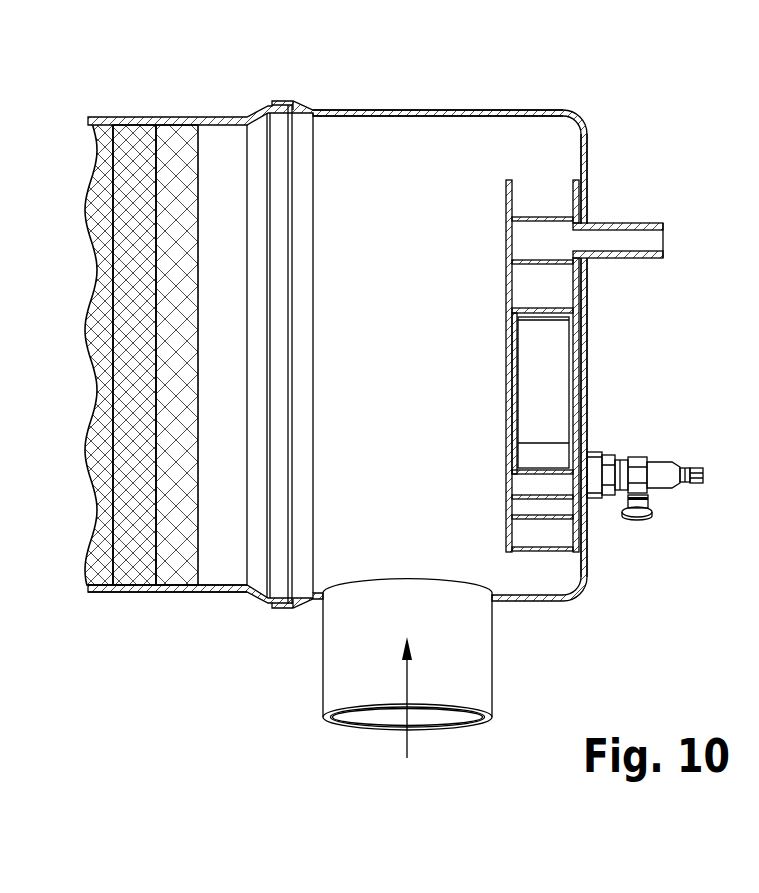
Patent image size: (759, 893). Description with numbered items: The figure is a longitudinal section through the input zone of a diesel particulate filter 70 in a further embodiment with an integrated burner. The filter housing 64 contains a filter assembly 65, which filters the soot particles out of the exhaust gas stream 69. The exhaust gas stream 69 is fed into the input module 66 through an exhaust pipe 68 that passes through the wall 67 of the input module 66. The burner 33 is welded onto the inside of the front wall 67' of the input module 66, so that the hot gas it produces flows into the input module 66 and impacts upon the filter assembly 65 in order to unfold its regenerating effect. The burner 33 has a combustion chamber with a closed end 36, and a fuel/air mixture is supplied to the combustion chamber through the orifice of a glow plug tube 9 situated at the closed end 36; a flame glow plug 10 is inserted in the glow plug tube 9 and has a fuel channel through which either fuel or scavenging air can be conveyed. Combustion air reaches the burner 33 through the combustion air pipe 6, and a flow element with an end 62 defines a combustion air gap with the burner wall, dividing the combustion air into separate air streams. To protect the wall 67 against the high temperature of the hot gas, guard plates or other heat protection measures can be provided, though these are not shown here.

The combustion air pipe 6 is at (621, 223).
The glow plug tube 9 is at (594, 499).
The flame glow plug 10 is at (657, 468).
The burner 33 is at (496, 184).
The closed end 36 is at (542, 188).
The end of flow baffle element 62 is at (578, 202).
The filter housing 64 is at (195, 122).
The filter assembly 65 is at (132, 133).
The input module 66 is at (358, 165).
The wall of input module 67 is at (438, 81).
The front wall of input module 67' is at (627, 355).
The exhaust pipe 68 is at (477, 643).
The exhaust gas stream 69 is at (405, 743).
The diesel particulate filter 70 is at (206, 600).